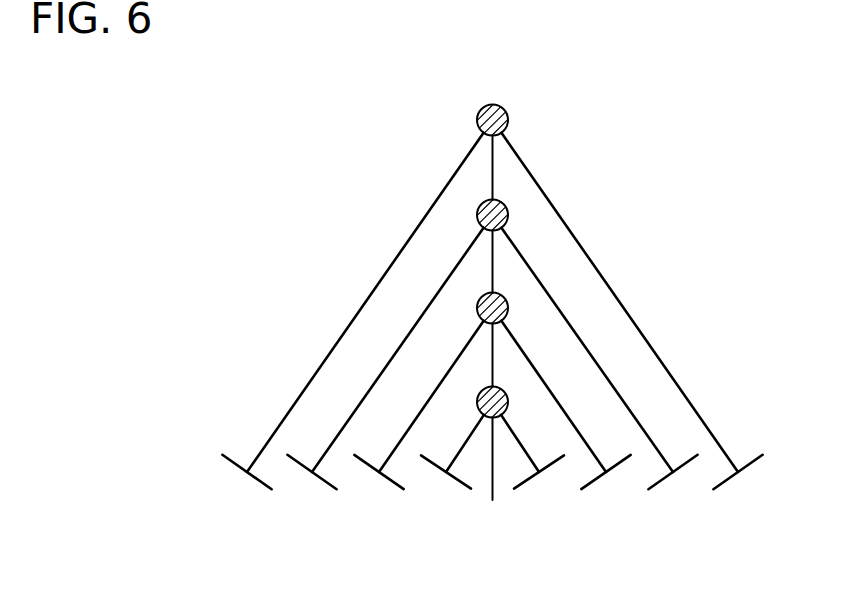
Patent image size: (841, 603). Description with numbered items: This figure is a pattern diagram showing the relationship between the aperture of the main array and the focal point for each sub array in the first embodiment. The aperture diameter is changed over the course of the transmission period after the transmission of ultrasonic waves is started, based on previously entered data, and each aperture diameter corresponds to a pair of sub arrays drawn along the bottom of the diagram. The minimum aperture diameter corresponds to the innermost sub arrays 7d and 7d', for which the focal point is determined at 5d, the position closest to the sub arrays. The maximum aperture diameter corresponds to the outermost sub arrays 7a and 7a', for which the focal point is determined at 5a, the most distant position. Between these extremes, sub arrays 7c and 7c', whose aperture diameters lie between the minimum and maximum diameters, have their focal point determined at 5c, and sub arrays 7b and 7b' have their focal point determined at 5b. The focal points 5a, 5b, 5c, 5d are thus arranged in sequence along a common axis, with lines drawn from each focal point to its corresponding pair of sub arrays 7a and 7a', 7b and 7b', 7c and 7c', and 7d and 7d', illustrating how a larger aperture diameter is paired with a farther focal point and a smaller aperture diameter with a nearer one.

The focal point 5a is at (508, 120).
The focal point 5b is at (508, 215).
The focal point 5c is at (509, 310).
The focal point 5d is at (509, 402).
The sub array 7a is at (348, 346).
The sub array 7a' is at (639, 346).
The sub array 7b is at (383, 393).
The sub array 7b' is at (607, 393).
The sub array 7c is at (415, 440).
The sub array 7c' is at (573, 440).
The sub array 7d is at (449, 487).
The sub array 7d' is at (538, 487).